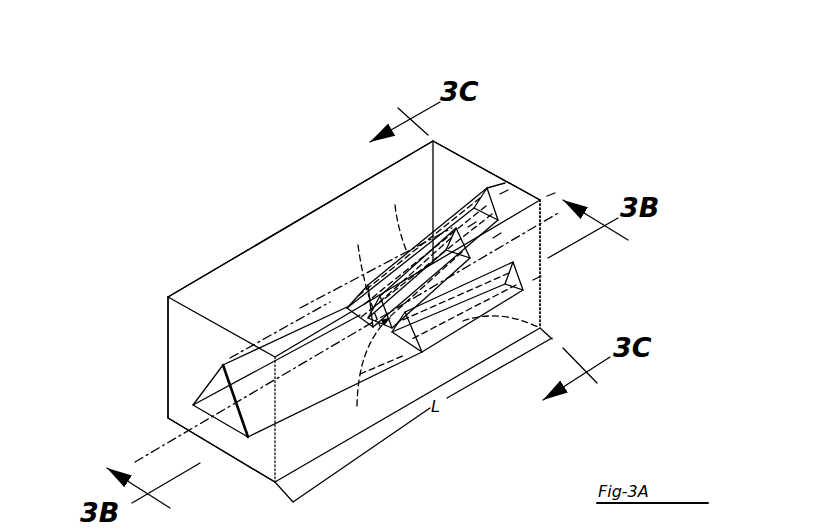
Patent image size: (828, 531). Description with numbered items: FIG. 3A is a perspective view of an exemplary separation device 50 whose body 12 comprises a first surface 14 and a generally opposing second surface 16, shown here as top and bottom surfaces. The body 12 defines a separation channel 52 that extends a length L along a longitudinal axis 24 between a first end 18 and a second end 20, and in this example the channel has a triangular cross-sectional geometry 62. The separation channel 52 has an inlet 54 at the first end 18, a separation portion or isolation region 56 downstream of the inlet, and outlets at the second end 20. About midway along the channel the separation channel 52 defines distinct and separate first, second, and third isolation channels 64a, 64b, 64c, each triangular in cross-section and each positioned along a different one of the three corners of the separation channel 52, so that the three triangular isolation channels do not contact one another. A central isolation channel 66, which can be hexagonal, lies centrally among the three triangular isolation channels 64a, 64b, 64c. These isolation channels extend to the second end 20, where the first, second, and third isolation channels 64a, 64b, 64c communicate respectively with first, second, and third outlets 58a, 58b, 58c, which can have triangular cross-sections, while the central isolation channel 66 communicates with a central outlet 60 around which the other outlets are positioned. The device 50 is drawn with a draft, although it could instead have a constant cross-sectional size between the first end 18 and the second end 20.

The body 12 is at (226, 281).
The first surface 14 is at (213, 282).
The second surface 16 is at (227, 455).
The first end 18 is at (190, 330).
The second end 20 is at (543, 200).
The longitudinal axis 24 is at (145, 452).
The separation device 50 is at (172, 193).
The separation channel 52 is at (330, 292).
The inlet 54 is at (220, 397).
The separation portion or isolation region 56 is at (303, 307).
The first outlet 58a is at (512, 258).
The second outlet 58b is at (500, 236).
The third outlet 58c is at (530, 278).
The central outlet 60 is at (500, 240).
The triangular cross-sectional geometry 62 is at (250, 410).
The first isolation channel 64a is at (395, 205).
The second isolation channel 64b is at (358, 245).
The third isolation channel 64c is at (542, 328).
The central isolation channel 66 is at (357, 406).